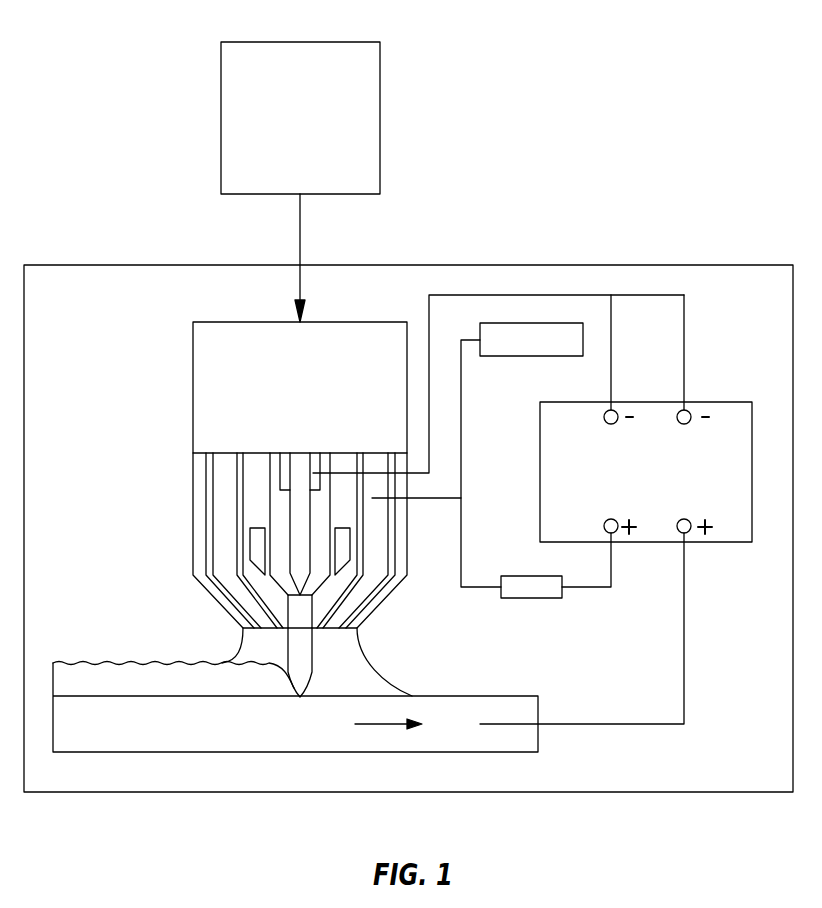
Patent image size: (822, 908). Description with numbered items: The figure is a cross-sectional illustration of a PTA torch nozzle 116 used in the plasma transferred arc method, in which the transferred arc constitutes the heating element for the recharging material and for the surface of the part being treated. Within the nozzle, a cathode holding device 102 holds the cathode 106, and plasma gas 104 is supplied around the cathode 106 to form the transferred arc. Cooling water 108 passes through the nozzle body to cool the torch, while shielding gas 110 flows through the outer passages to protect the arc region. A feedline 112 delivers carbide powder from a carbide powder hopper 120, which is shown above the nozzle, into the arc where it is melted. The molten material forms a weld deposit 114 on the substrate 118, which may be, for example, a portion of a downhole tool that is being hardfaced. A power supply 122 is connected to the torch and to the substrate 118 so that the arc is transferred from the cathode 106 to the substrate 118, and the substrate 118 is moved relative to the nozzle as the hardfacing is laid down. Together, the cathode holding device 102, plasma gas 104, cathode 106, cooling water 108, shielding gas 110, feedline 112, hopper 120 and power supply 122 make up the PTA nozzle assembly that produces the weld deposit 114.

The cathode holding device 102 is at (284, 473).
The plasma gas 104 is at (281, 505).
The cathode 106 is at (300, 530).
The cooling water 108 is at (257, 548).
The shielding gas 110 is at (210, 565).
The feedline 112 is at (253, 593).
The weld deposit 114 is at (185, 691).
The PTA torch nozzle 116 is at (640, 53).
The substrate 118 is at (323, 739).
The carbide powder hopper 120 is at (320, 131).
The power supply 122 is at (725, 477).